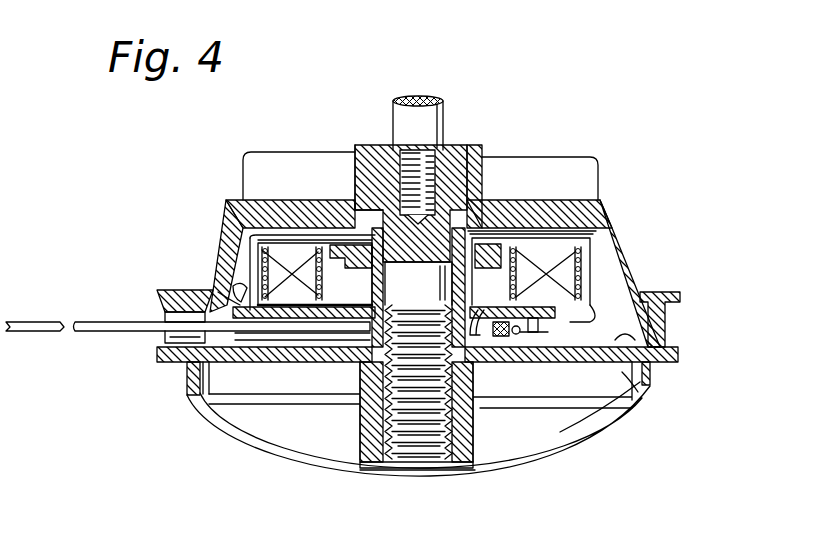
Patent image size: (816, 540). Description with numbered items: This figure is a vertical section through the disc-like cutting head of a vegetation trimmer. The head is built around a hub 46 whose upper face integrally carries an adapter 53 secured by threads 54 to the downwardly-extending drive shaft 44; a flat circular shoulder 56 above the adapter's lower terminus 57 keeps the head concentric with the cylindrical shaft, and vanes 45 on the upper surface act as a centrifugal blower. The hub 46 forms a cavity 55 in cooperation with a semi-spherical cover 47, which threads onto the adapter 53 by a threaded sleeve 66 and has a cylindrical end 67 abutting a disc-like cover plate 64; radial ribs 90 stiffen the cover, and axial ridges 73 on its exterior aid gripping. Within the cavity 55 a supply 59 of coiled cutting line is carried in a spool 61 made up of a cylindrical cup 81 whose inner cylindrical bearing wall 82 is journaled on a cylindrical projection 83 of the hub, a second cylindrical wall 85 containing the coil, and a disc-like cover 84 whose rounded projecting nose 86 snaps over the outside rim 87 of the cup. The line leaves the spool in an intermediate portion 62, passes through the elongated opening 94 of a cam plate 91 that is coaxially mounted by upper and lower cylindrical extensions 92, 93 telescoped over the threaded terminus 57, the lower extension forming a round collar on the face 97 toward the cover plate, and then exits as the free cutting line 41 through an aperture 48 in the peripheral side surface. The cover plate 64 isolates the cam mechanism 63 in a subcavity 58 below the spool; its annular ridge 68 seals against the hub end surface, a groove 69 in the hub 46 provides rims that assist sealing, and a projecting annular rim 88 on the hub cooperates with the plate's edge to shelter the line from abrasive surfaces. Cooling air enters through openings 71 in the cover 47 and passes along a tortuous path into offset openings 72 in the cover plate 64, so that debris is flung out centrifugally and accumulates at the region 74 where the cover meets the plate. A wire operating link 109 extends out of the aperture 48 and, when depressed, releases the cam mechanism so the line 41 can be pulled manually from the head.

The cutting line 41 is at (92, 322).
The drive shaft 44 is at (448, 102).
The vanes 45 is at (600, 164).
The hub 46 is at (612, 210).
The cover 47 is at (628, 412).
The aperture 48 is at (165, 338).
The adapter 53 is at (448, 143).
The threads 54 is at (405, 165).
The cavity 55 is at (300, 270).
The flat circular shoulder 56 is at (486, 240).
The lower terminus 57 is at (383, 408).
The subcavity 58 is at (612, 302).
The supply of coiled cutting line 59 is at (625, 250).
The spool 61 is at (296, 250).
The intermediate portion 62 is at (476, 302).
The cam mechanism 63 is at (235, 292).
The cover plate 64 is at (681, 352).
The threaded sleeve 66 is at (462, 412).
The cylindrical end 67 is at (622, 378).
The annular ridge 68 is at (610, 316).
The groove 69 is at (612, 335).
The openings 71 is at (595, 430).
The openings 72 is at (525, 358).
The axial ridges 73 is at (184, 372).
The debris accumulation region 74 is at (626, 374).
The cup 81 is at (556, 247).
The inner cylindrical bearing wall 82 is at (500, 240).
The cylindrical projection 83 is at (348, 245).
The disc-like cover 84 is at (572, 282).
The second cylindrical wall 85 is at (538, 247).
The rounded projecting nose 86 is at (230, 298).
The outside rim 87 is at (268, 262).
The projecting annular rim 88 is at (165, 292).
The radial ribs 90 is at (514, 442).
The cam plate 91 is at (342, 320).
The upper cylindrical extension 92 is at (384, 292).
The lower cylindrical extension 93 is at (362, 358).
The elongated opening 94 is at (492, 320).
The face 97 is at (548, 333).
The wire operating link 109 is at (165, 316).